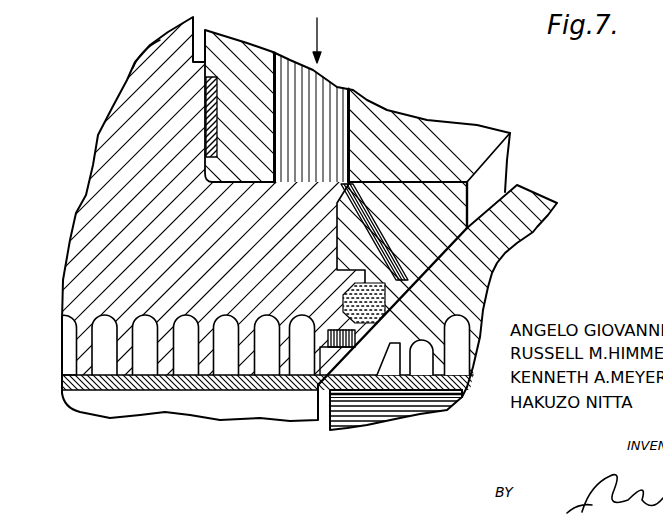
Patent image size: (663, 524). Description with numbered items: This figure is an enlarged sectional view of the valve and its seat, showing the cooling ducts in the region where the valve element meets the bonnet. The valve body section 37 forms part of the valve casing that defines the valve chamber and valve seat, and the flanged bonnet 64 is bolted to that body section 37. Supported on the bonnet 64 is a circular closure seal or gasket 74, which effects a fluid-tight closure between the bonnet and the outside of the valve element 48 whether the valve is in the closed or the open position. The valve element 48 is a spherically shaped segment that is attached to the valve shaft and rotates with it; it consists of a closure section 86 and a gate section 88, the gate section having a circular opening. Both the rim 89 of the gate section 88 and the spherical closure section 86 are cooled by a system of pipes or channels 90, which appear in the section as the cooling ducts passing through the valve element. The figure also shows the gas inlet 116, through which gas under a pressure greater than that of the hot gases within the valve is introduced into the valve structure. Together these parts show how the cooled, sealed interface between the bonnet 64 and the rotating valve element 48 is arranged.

The valve body section 37 is at (448, 130).
The valve element 48 is at (534, 232).
The flanged bonnet 64 is at (117, 180).
The circular closure seal or gasket 74 is at (352, 305).
The closure section 86 is at (463, 297).
The gate section 88 is at (347, 418).
The rim 89 is at (390, 343).
The pipes or channels 90 is at (452, 397).
The gas inlet 116 is at (327, 90).